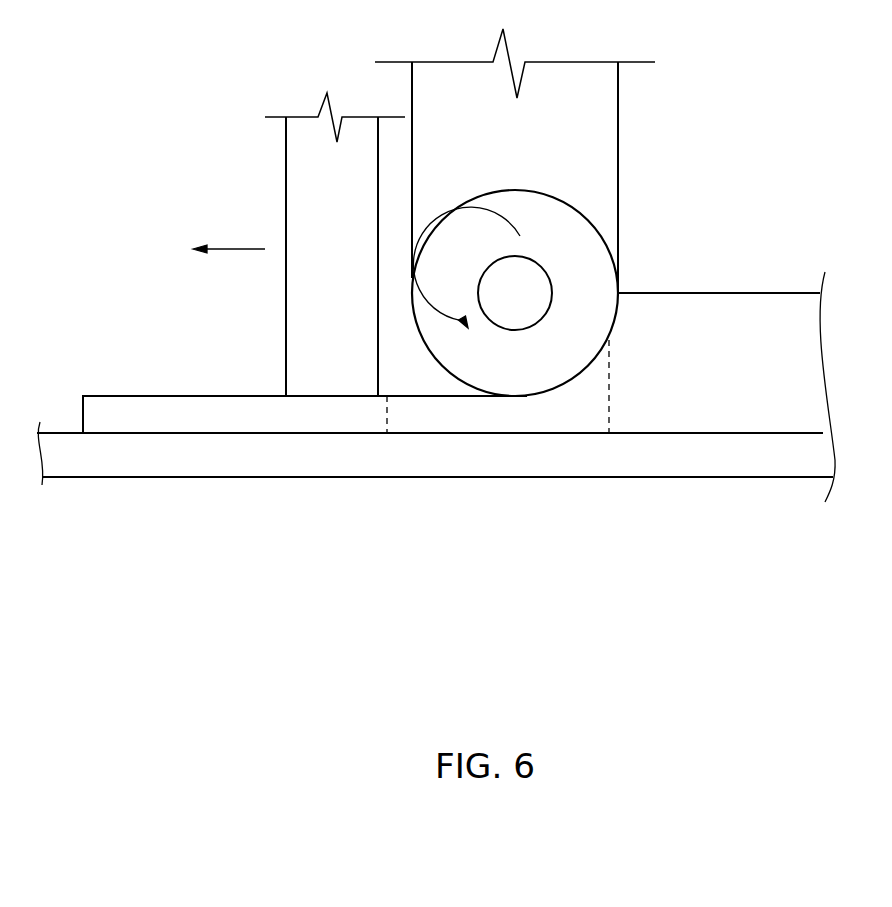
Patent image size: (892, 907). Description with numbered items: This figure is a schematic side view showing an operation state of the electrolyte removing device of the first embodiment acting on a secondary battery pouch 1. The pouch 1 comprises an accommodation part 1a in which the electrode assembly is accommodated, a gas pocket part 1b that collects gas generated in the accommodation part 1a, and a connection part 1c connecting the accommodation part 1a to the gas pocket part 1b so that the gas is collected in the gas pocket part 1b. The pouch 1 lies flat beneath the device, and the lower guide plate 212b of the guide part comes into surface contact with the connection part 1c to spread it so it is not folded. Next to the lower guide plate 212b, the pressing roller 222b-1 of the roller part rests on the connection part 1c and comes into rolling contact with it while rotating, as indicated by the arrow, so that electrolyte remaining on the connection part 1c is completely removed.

The lower guide plate 212b is at (305, 173).
The pressing roller 222b-1 is at (597, 255).
The pouch 1 is at (436, 452).
The accommodation part 1a is at (722, 424).
The gas pocket part 1b is at (247, 425).
The connection part 1c is at (473, 418).